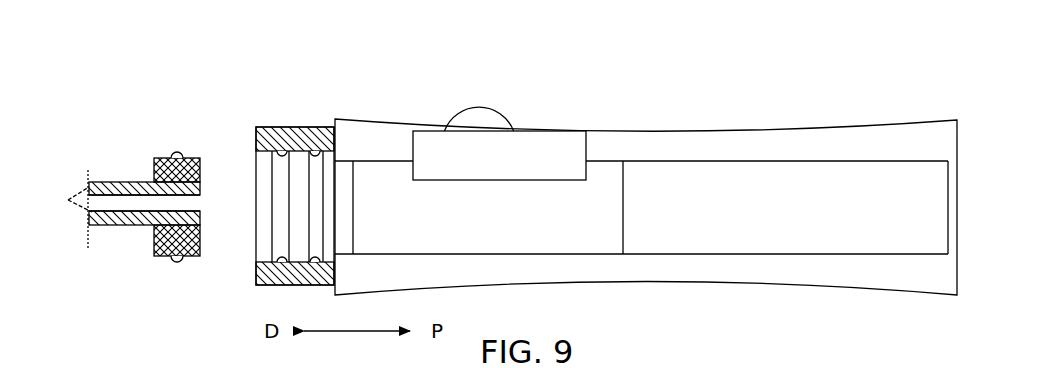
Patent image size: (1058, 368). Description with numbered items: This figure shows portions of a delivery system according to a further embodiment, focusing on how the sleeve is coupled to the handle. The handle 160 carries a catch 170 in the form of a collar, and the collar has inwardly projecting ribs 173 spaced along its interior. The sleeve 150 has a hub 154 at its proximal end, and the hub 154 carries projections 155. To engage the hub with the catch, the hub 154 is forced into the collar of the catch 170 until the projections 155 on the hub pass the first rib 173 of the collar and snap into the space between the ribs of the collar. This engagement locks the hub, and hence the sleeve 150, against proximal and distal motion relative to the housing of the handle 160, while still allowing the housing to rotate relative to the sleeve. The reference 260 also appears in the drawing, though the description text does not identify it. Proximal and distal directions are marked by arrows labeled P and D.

The sleeve 150 is at (122, 193).
The hub 154 is at (123, 168).
The projections 155 is at (173, 155).
The handle 160 is at (575, 128).
The catch 170 is at (244, 174).
The inwardly projecting ribs 173 is at (242, 135).
The handle assembly 260 is at (698, 367).